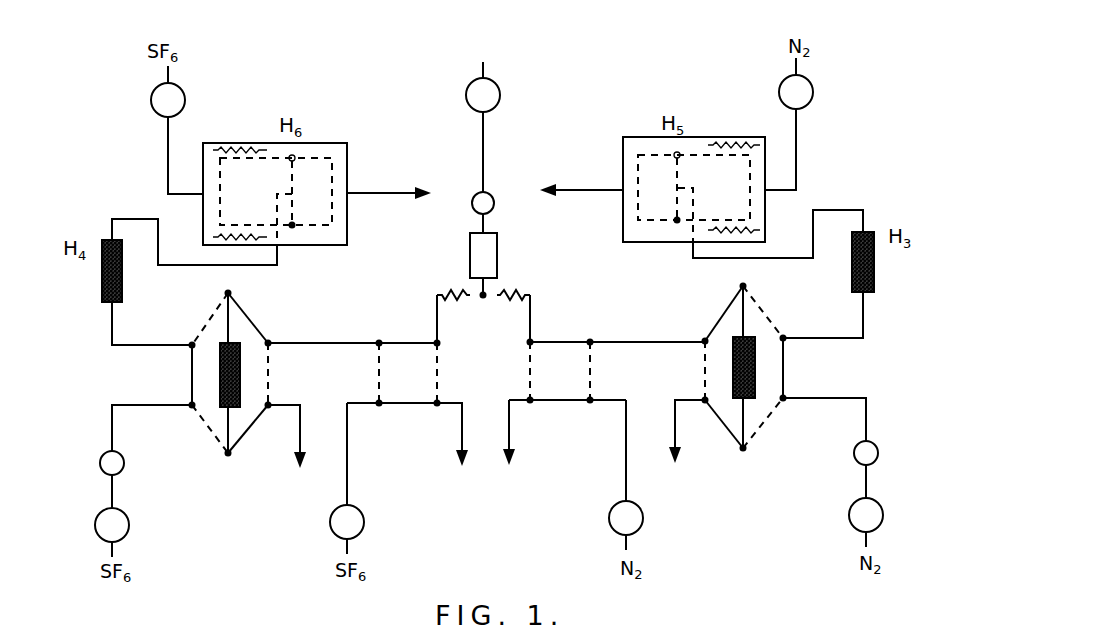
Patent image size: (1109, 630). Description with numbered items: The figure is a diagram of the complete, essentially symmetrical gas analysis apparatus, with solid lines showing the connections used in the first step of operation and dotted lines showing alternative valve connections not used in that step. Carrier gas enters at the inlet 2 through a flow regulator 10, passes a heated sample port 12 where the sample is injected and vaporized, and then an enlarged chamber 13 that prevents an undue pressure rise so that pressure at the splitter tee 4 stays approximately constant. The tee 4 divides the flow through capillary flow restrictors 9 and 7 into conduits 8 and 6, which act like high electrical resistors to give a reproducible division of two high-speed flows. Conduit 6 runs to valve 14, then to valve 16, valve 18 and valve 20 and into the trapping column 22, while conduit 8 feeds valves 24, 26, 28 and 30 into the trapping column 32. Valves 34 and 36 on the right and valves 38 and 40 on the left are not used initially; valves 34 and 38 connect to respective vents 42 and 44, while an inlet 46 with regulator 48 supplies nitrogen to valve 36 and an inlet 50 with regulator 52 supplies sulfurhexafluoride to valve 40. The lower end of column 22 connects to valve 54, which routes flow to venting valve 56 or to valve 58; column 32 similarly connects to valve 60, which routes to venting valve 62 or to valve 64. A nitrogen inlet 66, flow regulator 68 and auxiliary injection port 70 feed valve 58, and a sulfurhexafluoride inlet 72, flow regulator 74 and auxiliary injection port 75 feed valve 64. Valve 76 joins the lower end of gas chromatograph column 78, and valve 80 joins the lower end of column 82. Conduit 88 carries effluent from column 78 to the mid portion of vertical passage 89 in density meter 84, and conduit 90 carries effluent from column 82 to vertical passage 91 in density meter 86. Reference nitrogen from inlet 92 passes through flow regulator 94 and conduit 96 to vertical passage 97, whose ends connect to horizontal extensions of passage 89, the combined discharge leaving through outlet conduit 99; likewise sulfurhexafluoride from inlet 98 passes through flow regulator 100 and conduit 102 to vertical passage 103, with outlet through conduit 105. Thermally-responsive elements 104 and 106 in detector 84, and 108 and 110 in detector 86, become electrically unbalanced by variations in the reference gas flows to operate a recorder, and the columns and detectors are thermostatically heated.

The inlet 2 is at (485, 66).
The splitter tee 4 is at (485, 297).
The conduit 6 is at (531, 300).
The flow restrictor 7 is at (510, 293).
The conduit 8 is at (436, 300).
The flow restrictor 9 is at (454, 291).
The flow regulator 10 is at (466, 97).
The sample port 12 is at (490, 196).
The enlarged chamber 13 is at (499, 246).
The valve 14 is at (530, 342).
The valve 16 is at (591, 341).
The valve 18 is at (704, 340).
The valve 20 is at (746, 285).
The trapping column 22 is at (755, 367).
The valve 24 is at (440, 345).
The valve 26 is at (379, 342).
The valve 28 is at (270, 342).
The valve 30 is at (232, 293).
The trapping column 32 is at (240, 371).
The valve 34 is at (530, 402).
The valve 36 is at (590, 402).
The valve 38 is at (437, 404).
The valve 40 is at (379, 404).
The vent 42 is at (513, 450).
The vent 44 is at (460, 448).
The inlet connection 46 is at (623, 544).
The regulator 48 is at (643, 510).
The inlet 50 is at (345, 545).
The regulator 52 is at (362, 516).
The valve 54 is at (745, 448).
The valve 56 is at (704, 398).
The valve 58 is at (787, 397).
The valve 60 is at (229, 456).
The venting valve 62 is at (268, 409).
The valve 64 is at (190, 404).
The inlet 66 is at (869, 540).
The flow regulator 68 is at (879, 505).
The auxiliary injection port 70 is at (872, 446).
The inlet 72 is at (116, 549).
The flow regulator 74 is at (100, 514).
The auxiliary injection port 75 is at (102, 455).
The valve 76 is at (785, 337).
The gas chromatograph column 78 is at (875, 264).
The valve 80 is at (191, 345).
The gas chromatograph column 82 is at (102, 284).
The density meter 84 is at (663, 243).
The density meter 86 is at (293, 247).
The conduit 88 is at (823, 209).
The vertical passage 89 is at (680, 172).
The conduit 90 is at (131, 219).
The vertical passage 91 is at (290, 179).
The inlet 92 is at (798, 63).
The flow regulator 94 is at (814, 94).
The conduit 96 is at (798, 133).
The vertical passage 97 is at (748, 200).
The inlet 98 is at (166, 76).
The outlet conduit 99 is at (595, 189).
The flow regulator 100 is at (185, 98).
The conduit 102 is at (167, 152).
The vertical passage 103 is at (224, 202).
The thermally-responsive element 104 is at (742, 144).
The conduit 105 is at (387, 192).
The thermally-responsive element 106 is at (745, 230).
The thermally-responsive element 108 is at (238, 147).
The thermally-responsive element 110 is at (227, 242).